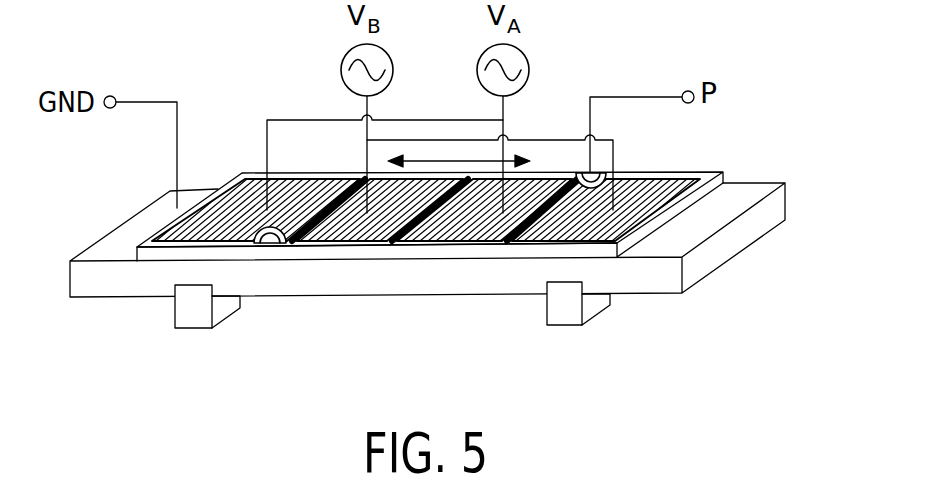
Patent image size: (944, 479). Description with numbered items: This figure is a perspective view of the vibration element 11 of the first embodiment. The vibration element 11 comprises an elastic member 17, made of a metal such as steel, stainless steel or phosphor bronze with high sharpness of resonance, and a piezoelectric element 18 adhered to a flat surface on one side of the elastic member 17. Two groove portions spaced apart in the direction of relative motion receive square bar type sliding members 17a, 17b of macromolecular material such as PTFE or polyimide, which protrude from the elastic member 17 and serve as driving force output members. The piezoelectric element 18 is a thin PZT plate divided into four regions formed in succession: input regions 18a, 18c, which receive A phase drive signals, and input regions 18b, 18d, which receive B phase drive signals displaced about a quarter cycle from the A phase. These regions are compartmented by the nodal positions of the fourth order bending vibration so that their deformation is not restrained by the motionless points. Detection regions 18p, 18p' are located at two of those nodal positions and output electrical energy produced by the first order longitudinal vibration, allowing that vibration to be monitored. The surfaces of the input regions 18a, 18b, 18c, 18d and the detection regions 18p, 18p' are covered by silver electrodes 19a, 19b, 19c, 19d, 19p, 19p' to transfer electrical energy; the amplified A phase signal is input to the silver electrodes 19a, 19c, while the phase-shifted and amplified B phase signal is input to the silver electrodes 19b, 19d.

The vibration element 11 is at (790, 111).
The elastic member 17 is at (777, 212).
The sliding member 17a is at (185, 328).
The sliding member 17b is at (563, 325).
The piezoelectric element 18 is at (718, 182).
The input region 18a is at (213, 253).
The input region 18b is at (337, 250).
The input region 18c is at (442, 250).
The input region 18d is at (603, 257).
The detection region 18p is at (305, 299).
The detection region 18p' is at (629, 141).
The silver electrode 19a is at (293, 192).
The silver electrode 19b is at (358, 197).
The silver electrode 19c is at (537, 190).
The silver electrode 19d is at (680, 177).
The silver electrode 19p is at (241, 184).
The silver electrode 19p' is at (616, 117).